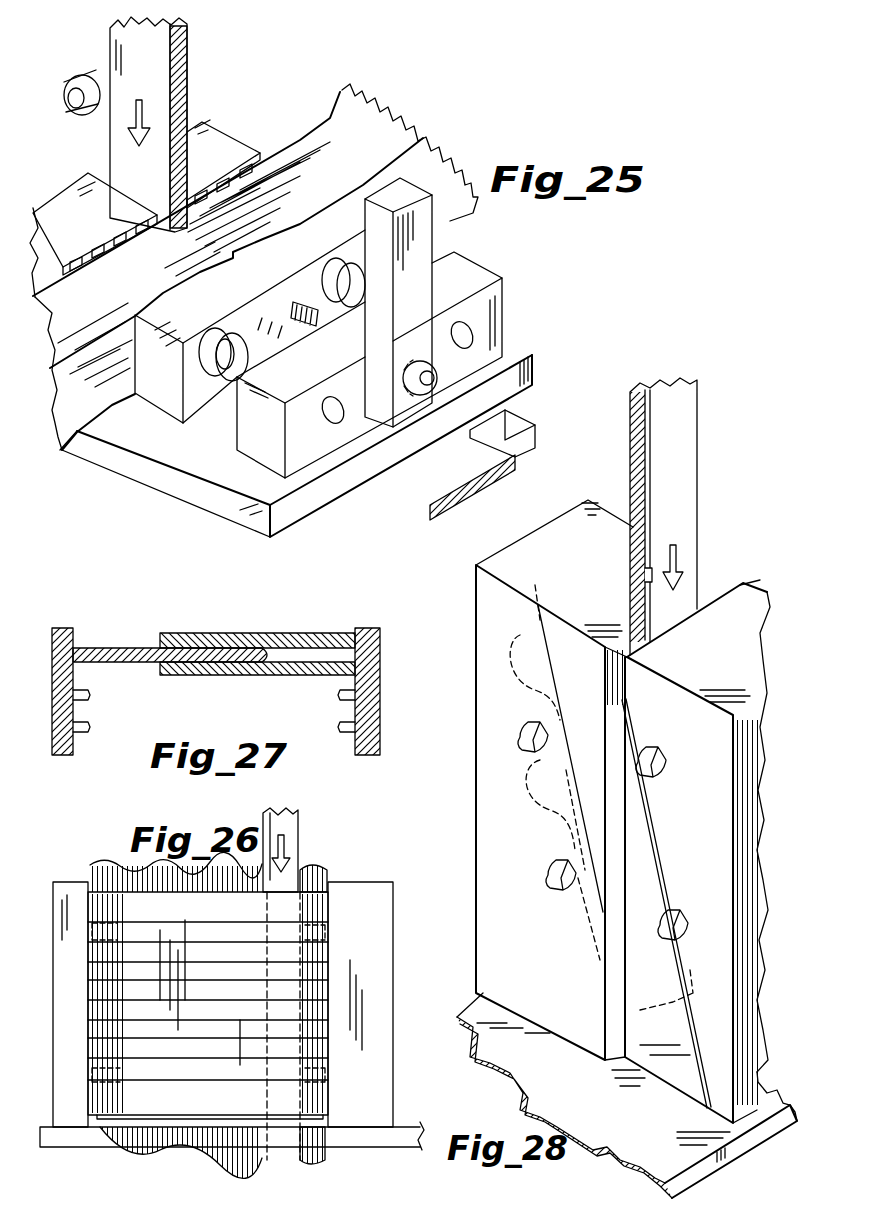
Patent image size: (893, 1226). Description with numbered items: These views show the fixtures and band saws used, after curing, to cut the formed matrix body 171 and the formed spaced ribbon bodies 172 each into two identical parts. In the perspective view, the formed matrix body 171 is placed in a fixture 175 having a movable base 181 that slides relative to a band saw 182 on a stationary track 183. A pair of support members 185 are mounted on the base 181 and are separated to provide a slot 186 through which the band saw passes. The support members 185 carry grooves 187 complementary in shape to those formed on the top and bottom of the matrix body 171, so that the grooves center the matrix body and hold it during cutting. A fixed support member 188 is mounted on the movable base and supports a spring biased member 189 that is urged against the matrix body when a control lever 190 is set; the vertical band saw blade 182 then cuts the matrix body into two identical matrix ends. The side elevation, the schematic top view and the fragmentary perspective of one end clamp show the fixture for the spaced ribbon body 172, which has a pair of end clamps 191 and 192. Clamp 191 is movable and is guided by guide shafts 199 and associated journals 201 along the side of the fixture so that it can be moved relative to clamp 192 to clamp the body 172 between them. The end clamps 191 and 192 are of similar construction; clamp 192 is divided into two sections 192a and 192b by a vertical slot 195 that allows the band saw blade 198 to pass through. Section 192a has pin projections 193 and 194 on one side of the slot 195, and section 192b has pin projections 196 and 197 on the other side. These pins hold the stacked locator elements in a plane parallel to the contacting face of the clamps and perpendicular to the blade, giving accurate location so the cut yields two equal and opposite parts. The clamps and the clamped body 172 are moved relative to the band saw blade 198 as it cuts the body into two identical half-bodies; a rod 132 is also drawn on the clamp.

In FIG. 25, the formed matrix body 171 is at (284, 142).
In FIG. 26, the formed spaced ribbon body 172 is at (317, 887).
In FIG. 25, the fixture 175 is at (252, 526).
In FIG. 25, the movable base 181 is at (513, 380).
In FIG. 25, the band saw blade 182 is at (190, 40).
In FIG. 25, the stationary track 183 is at (490, 460).
In FIG. 25, the support members 185 is at (80, 205).
In FIG. 25, the slot 186 is at (110, 162).
In FIG. 25, the grooves 187 is at (115, 242).
In FIG. 25, the fixed support member 188 is at (490, 303).
In FIG. 25, the spring biased member 189 is at (167, 395).
In FIG. 25, the control lever 190 is at (418, 245).
In FIG. 27, the end clamp 191 is at (73, 707).
In FIG. 26, the end clamp 191 is at (72, 1082).
In FIG. 27, the end clamp 192 is at (360, 683).
In FIG. 26, the end clamp 192 is at (368, 980).
In FIG. 28, the end clamp 192 is at (602, 787).
In FIG. 28, the section 192a is at (597, 517).
In FIG. 28, the section 192b is at (753, 603).
In FIG. 28, the pin projection 193 is at (522, 737).
In FIG. 28, the pin projection 194 is at (550, 880).
In FIG. 28, the vertical slot 195 is at (757, 584).
In FIG. 26, the pin projection 196 is at (323, 952).
In FIG. 28, the pin projection 196 is at (660, 758).
In FIG. 26, the pin projection 197 is at (320, 1080).
In FIG. 28, the pin projection 197 is at (713, 873).
In FIG. 26, the band saw blade 198 is at (288, 826).
In FIG. 28, the band saw blade 198 is at (687, 438).
In FIG. 27, the guide shafts 199 is at (132, 647).
In FIG. 27, the journals 201 is at (308, 633).
In FIG. 28, the guide rod 132 is at (708, 792).